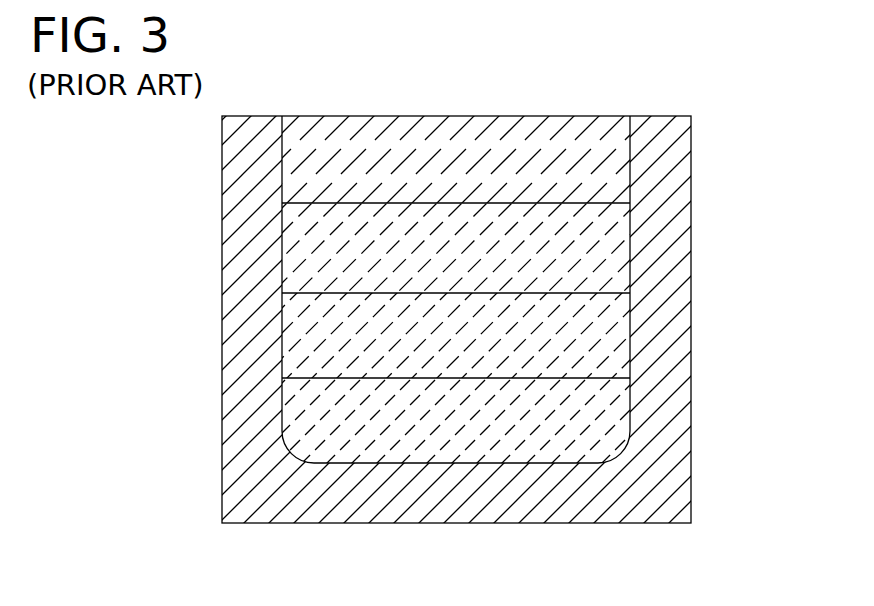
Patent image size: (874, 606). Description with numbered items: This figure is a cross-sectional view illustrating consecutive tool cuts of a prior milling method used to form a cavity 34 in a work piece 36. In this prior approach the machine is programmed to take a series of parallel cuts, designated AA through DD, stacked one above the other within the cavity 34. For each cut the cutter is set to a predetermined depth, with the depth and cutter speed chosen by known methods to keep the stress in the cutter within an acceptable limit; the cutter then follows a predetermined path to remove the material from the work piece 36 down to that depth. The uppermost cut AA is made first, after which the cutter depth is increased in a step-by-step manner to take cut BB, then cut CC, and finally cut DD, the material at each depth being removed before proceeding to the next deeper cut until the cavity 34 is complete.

The cavity 34 is at (283, 345).
The work piece 36 is at (672, 523).
The first tool cut AA is at (588, 161).
The second tool cut BB is at (588, 250).
The third tool cut CC is at (590, 332).
The fourth tool cut DD is at (592, 415).